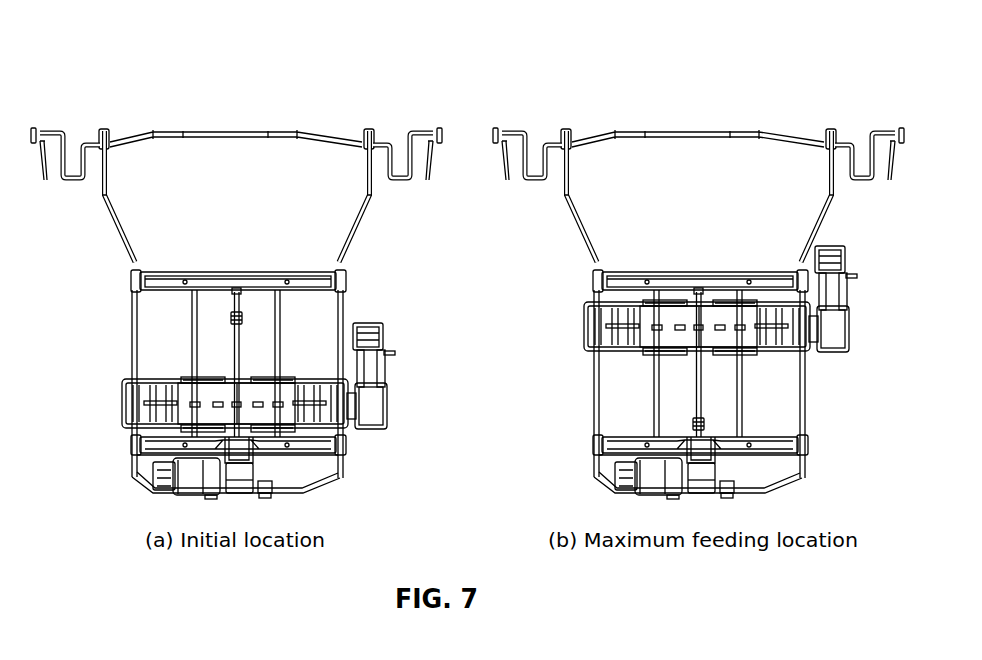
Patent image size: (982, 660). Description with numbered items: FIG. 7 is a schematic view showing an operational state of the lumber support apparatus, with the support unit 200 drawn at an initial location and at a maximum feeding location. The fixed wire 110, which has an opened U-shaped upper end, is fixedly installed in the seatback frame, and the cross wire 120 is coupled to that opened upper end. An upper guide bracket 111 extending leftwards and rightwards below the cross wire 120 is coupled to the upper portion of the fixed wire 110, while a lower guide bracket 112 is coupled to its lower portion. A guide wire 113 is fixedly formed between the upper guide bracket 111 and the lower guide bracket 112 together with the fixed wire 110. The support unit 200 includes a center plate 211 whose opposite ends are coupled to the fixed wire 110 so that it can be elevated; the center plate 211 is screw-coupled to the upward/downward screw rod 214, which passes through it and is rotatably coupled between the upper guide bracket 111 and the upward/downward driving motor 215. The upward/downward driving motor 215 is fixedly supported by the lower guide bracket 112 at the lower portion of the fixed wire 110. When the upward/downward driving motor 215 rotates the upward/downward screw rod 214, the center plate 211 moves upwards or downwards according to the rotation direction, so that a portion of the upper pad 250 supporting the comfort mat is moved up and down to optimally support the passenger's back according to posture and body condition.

The fixed wire 110 is at (112, 222).
The upper guide bracket 111 is at (300, 268).
The lower guide bracket 112 is at (135, 440).
The guide wire 113 is at (195, 360).
The cross wire 120 is at (235, 132).
The support unit 200 is at (112, 393).
The center plate 211 is at (818, 382).
The upward/downward screw rod 214 is at (235, 337).
The upward/downward driving motor 215 is at (188, 482).
The upper pad 250 is at (285, 415).